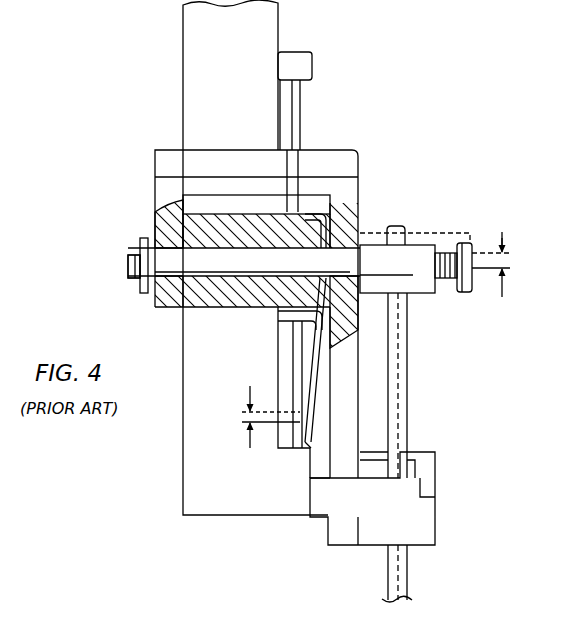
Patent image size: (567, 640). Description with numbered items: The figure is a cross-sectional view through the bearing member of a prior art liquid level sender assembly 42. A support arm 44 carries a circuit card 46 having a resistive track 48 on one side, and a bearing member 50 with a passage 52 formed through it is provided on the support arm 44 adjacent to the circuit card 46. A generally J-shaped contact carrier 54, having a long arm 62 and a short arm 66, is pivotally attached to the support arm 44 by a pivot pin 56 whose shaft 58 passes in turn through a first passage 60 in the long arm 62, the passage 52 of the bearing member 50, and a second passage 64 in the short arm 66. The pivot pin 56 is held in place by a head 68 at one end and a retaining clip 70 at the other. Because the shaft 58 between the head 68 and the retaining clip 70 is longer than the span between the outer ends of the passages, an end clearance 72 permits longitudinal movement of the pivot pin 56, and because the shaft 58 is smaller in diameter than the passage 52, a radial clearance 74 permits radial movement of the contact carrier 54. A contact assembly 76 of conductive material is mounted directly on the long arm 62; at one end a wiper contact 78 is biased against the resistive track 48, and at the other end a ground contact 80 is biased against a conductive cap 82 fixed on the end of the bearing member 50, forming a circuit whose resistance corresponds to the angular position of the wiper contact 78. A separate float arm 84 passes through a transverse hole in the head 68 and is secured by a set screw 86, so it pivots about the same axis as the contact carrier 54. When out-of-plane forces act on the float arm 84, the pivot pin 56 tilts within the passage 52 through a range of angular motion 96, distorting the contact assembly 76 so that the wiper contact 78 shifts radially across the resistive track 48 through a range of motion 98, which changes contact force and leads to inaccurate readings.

The prior art sender assembly 42 is at (140, 106).
The support arm 44 is at (278, 33).
The circuit card 46 is at (302, 100).
The resistive track 48 is at (250, 385).
The bearing member 50 is at (218, 308).
The passage 52 is at (276, 245).
The contact carrier 54 is at (340, 150).
The pivot pin 56 is at (117, 265).
The shaft 58 is at (130, 282).
The first passage 60 is at (366, 245).
The long arm 62 is at (350, 376).
The second passage 64 is at (198, 247).
The short arm 66 is at (172, 318).
The head 68 is at (425, 238).
The retaining clip 70 is at (140, 246).
The end clearance 72 is at (147, 229).
The radial clearance 74 is at (300, 197).
The contact assembly 76 is at (314, 346).
The wiper contact 78 is at (306, 452).
The ground contact 80 is at (340, 292).
The conductive cap 82 is at (285, 320).
The float arm 84 is at (400, 415).
The set screw 86 is at (462, 293).
The range of angular motion 96 is at (502, 233).
The range of motion 98 is at (250, 443).